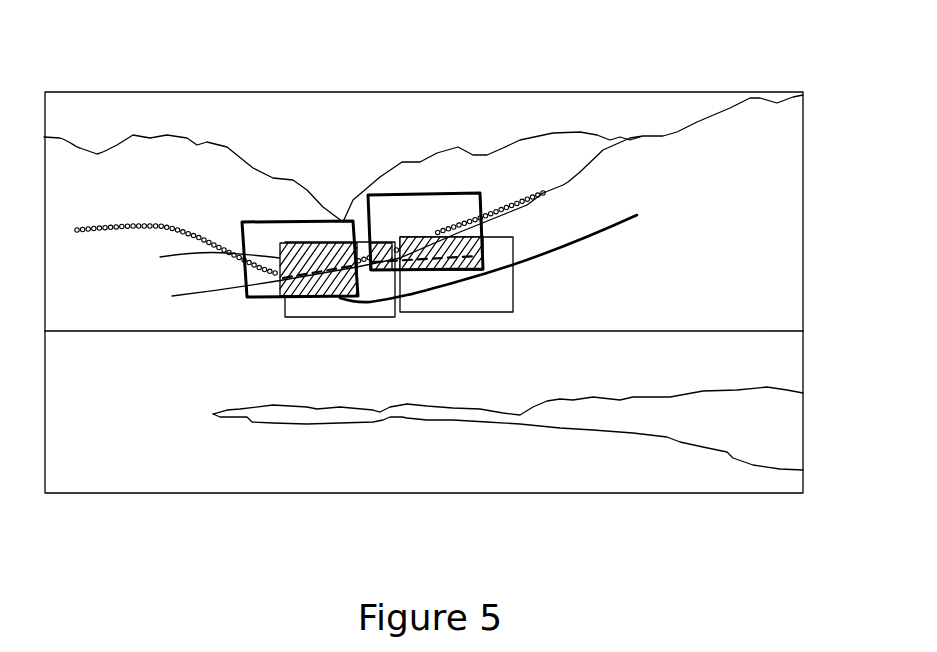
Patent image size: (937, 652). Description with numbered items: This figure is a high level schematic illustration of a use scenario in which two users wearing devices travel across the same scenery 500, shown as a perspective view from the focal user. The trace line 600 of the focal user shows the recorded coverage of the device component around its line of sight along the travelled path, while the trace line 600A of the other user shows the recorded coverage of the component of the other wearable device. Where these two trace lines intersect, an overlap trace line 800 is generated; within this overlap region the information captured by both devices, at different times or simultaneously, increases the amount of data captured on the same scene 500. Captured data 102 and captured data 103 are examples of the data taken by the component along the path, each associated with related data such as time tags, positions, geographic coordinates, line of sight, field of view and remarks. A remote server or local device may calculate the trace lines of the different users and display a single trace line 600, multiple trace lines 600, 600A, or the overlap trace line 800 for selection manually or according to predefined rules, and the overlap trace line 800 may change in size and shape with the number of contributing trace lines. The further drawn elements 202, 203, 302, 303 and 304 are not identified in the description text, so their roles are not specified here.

The scenery 500 is at (78, 396).
The trace line of the other user 600A is at (174, 226).
The overlap trace line 800 is at (299, 248).
The first image footprint 302 is at (311, 248).
The second image footprint 303 is at (381, 248).
The third image footprint 304 is at (413, 248).
The second camera field of view 203 is at (467, 222).
The first camera field of view 202 is at (252, 302).
The captured data 102 is at (347, 317).
The captured data 103 is at (483, 312).
The trace line of the focal user 600 is at (602, 243).